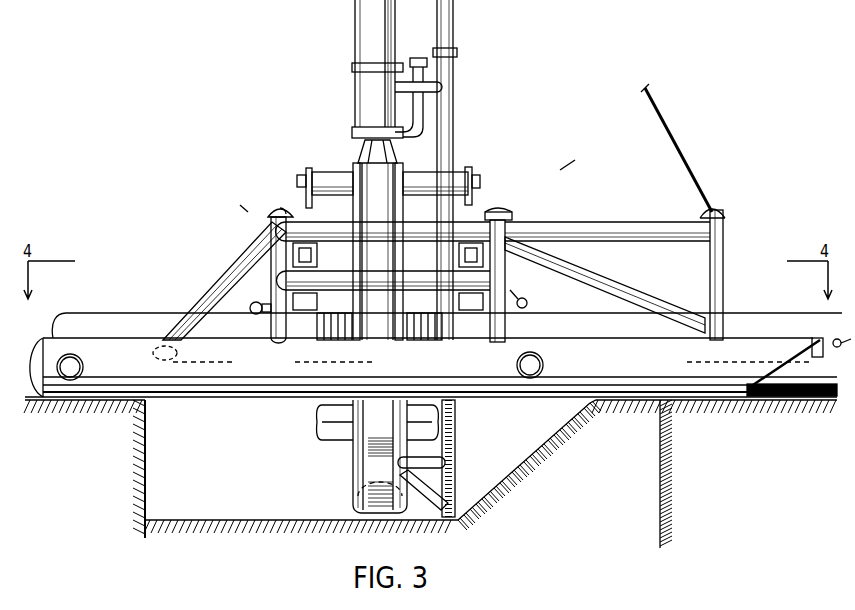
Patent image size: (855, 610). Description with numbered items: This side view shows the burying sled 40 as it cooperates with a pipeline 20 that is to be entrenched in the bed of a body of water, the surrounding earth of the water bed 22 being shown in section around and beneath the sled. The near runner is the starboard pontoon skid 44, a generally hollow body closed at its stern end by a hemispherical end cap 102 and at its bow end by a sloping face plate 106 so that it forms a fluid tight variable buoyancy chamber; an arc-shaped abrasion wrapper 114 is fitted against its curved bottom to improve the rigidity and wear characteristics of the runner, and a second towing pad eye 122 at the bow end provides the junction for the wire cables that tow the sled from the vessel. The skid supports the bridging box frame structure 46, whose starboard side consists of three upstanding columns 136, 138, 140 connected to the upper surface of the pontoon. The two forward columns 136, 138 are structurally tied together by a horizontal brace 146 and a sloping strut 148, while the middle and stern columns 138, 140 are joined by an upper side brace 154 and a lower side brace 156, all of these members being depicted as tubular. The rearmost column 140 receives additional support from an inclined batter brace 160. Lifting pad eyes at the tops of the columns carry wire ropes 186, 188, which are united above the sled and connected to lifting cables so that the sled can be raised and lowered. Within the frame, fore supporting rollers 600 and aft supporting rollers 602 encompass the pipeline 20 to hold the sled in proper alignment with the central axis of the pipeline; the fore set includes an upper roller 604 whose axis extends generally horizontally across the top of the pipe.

The pipeline 20 is at (818, 401).
The earth 22 is at (710, 512).
The burying sled 40 is at (571, 165).
The starboard pontoon skid 44 is at (142, 352).
The bridging box frame structure 46 is at (236, 205).
The hemispherical end cap 102 is at (33, 352).
The sloping face plate 106 is at (777, 400).
The abrasion wrapper 114 is at (168, 401).
The second towing pad eye 122 is at (818, 337).
The upstanding post or column 136 is at (723, 242).
The upstanding post or column 138 is at (508, 213).
The upstanding post or column 140 is at (270, 242).
The brace 146 is at (632, 205).
The strut 148 is at (645, 272).
The upper side brace 154 is at (428, 223).
The lower side brace 156 is at (496, 280).
The batter brace 160 is at (233, 265).
The wire rope 186 is at (657, 103).
The wire rope 188 is at (287, 200).
The fore supporting rollers 600 is at (462, 422).
The aft supporting rollers 602 is at (312, 410).
The upper roller 604 is at (527, 310).